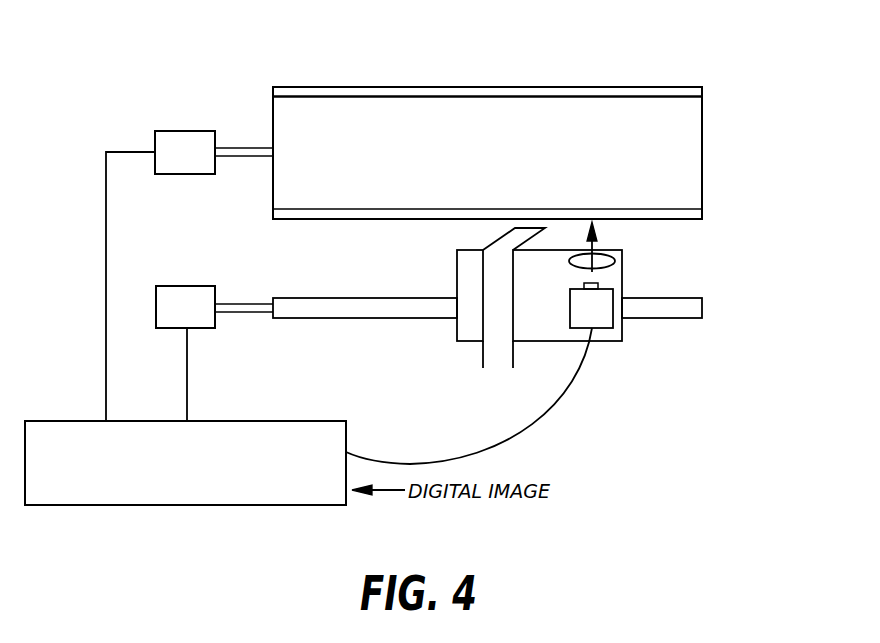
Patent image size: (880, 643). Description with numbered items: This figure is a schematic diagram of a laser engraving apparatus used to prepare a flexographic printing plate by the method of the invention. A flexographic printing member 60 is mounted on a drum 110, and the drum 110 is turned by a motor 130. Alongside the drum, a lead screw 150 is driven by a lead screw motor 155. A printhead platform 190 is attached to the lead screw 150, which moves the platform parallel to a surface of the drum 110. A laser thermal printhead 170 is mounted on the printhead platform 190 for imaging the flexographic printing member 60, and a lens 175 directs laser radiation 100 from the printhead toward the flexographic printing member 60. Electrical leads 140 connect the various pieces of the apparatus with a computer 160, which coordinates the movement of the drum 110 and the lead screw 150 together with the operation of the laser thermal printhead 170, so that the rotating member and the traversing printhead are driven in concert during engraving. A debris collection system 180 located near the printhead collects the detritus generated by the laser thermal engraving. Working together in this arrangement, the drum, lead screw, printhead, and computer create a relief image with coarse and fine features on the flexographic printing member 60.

The flexographic printing member 60 is at (672, 87).
The laser radiation 100 is at (597, 237).
The drum 110 is at (702, 152).
The motor 130 is at (181, 131).
The electrical leads 140 is at (187, 388).
The lead screw 150 is at (358, 298).
The lead screw motor 155 is at (188, 286).
The computer 160 is at (245, 505).
The laser thermal printhead 170 is at (607, 299).
The lens 175 is at (615, 261).
The debris collection system 180 is at (497, 348).
The printhead platform 190 is at (615, 338).